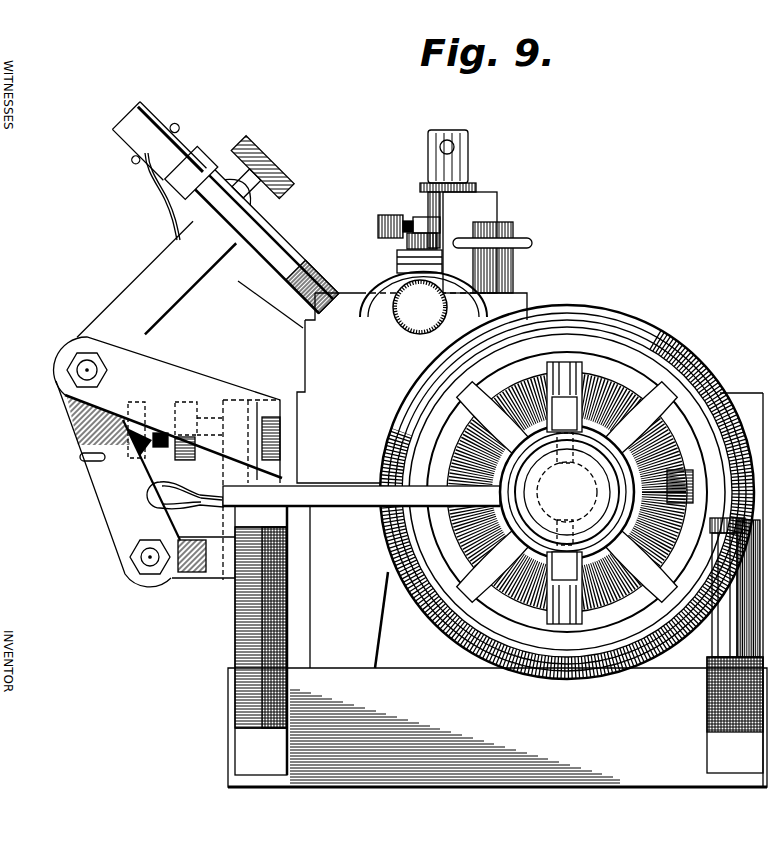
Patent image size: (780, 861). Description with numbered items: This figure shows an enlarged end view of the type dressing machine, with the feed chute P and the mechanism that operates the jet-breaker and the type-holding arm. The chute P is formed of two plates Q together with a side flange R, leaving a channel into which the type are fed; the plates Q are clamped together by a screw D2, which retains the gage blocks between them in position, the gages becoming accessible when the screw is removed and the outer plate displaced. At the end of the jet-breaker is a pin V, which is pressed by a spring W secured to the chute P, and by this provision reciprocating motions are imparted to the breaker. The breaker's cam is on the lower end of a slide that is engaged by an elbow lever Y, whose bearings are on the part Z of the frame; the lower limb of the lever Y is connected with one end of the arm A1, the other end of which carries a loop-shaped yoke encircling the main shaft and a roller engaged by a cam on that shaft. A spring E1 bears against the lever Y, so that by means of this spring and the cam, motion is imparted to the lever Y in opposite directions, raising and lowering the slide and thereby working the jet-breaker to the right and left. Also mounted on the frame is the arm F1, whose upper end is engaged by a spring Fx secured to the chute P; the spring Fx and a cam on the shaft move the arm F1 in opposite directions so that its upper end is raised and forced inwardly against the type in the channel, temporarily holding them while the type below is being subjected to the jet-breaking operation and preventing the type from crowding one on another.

The arm A1 is at (183, 580).
The part of the frame Z is at (200, 383).
The elbow lever Y is at (112, 282).
The spring E1 is at (98, 468).
The spring W is at (292, 254).
The plates Q is at (152, 116).
The screw D2 is at (262, 180).
The chute P is at (147, 150).
The spring Fx is at (182, 227).
The arm F1 is at (252, 278).
The pin V is at (330, 280).
The flange R is at (488, 492).